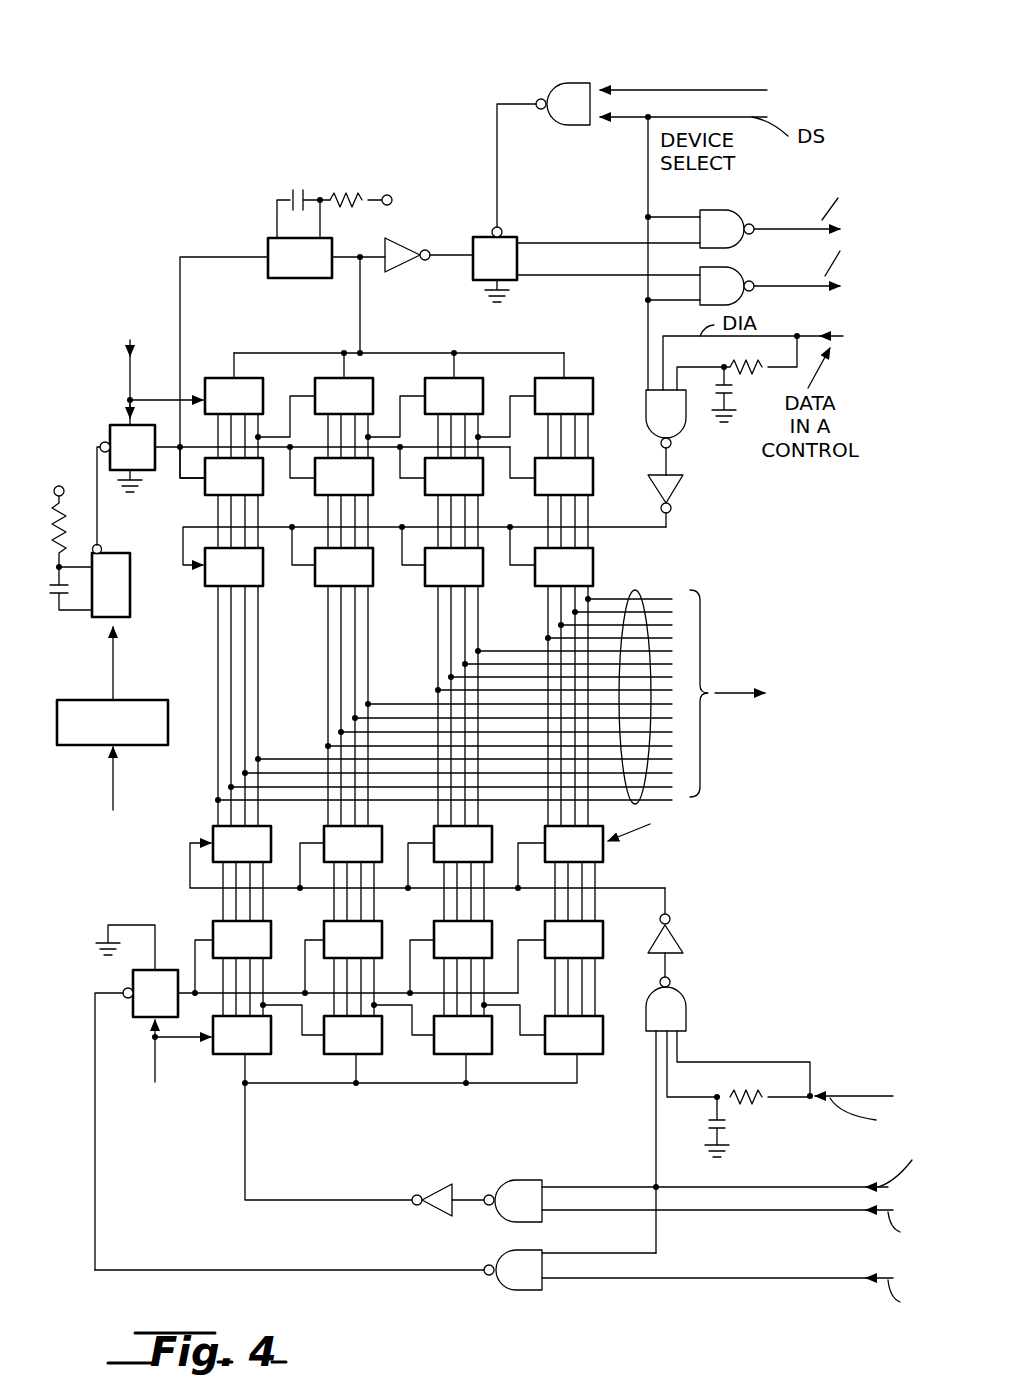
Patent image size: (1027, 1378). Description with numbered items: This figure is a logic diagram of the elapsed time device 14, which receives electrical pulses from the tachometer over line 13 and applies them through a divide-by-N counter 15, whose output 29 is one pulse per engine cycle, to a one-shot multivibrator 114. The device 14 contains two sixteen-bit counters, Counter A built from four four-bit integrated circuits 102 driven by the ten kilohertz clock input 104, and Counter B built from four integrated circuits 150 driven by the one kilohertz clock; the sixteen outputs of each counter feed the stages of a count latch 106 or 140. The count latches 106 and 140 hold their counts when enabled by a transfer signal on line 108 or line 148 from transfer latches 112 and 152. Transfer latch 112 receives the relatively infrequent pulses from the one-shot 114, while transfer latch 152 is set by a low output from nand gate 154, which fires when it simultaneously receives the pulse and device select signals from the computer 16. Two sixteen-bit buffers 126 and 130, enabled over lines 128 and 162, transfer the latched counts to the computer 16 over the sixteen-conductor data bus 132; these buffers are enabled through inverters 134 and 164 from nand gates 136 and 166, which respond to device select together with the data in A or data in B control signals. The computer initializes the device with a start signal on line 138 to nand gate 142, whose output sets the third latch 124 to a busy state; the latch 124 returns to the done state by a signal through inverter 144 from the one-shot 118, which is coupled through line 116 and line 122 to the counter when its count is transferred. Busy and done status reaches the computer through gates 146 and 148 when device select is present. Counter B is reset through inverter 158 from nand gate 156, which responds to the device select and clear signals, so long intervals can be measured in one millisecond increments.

The line 13 is at (110, 795).
The elapsed time device 14 is at (188, 162).
The divide-by-N counter 15 is at (68, 700).
The computer 16 is at (790, 693).
The output line 29 is at (116, 657).
The 4-bit integrated circuits 102 is at (399, 404).
The clock input line 104 is at (127, 376).
The count latch 106 is at (399, 503).
The line 108 is at (170, 452).
The transfer latch 112 is at (109, 428).
The one-shot multivibrator 114 is at (132, 598).
The line 116 is at (181, 320).
The one-shot 118 is at (358, 233).
The line 122 is at (362, 315).
The third latch 124 is at (520, 232).
The 16-bit buffer 126 is at (399, 687).
The line 128 is at (664, 530).
The 16-bit buffer 130 is at (475, 866).
The 16-conductor data bus 132 is at (635, 590).
The inverter 134 is at (672, 492).
The nand gate 136 is at (648, 388).
The line 138 is at (622, 88).
The count latch 140 is at (408, 968).
The nand gate 142 is at (567, 127).
The inverter 144 is at (412, 262).
The gate 146 is at (757, 203).
The gate 148 is at (757, 296).
The 4-bit integrated circuits 150 is at (408, 1101).
The transfer latch 152 is at (130, 972).
The nand gate 154 is at (528, 1290).
The nand gate 156 is at (528, 1180).
The inverter 158 is at (446, 1185).
The line 162 is at (667, 898).
The inverter 164 is at (684, 940).
The nand gate 166 is at (686, 1002).